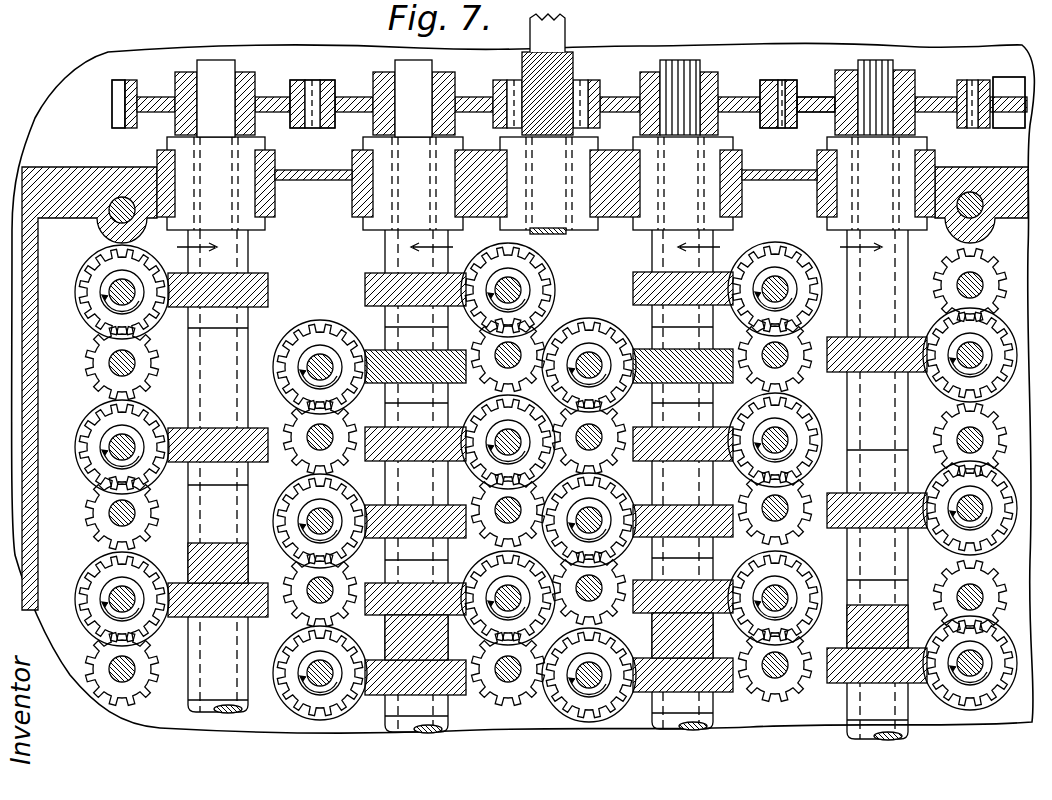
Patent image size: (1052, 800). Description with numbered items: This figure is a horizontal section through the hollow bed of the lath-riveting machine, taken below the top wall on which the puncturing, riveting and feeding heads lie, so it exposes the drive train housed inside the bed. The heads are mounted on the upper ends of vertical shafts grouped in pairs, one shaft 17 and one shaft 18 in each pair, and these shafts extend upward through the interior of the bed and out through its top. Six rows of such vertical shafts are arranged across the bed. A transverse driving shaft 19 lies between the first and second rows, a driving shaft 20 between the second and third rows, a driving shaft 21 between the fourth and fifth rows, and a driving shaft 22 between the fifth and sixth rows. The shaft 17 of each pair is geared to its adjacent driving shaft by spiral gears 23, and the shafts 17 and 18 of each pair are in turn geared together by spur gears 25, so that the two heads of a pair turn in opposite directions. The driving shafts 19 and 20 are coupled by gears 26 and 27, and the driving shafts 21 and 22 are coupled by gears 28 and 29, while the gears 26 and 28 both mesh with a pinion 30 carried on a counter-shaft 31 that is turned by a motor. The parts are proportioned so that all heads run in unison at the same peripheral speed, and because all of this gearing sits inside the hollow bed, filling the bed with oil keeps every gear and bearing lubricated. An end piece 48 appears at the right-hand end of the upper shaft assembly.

The vertical shaft 17 is at (98, 302).
The vertical shaft 18 is at (115, 363).
The transverse driving shaft 19 is at (882, 90).
The driving shaft 20 is at (690, 66).
The driving shaft 21 is at (418, 82).
The driving shaft 22 is at (215, 92).
The spiral gears 23 is at (360, 352).
The spur gears 25 is at (300, 390).
The gear 26 is at (750, 90).
The gear 27 is at (815, 88).
The gear 28 is at (340, 95).
The gear 29 is at (160, 75).
The pinion 30 is at (588, 83).
The counter-shaft 31 is at (553, 35).
The end piece 48 is at (1010, 82).